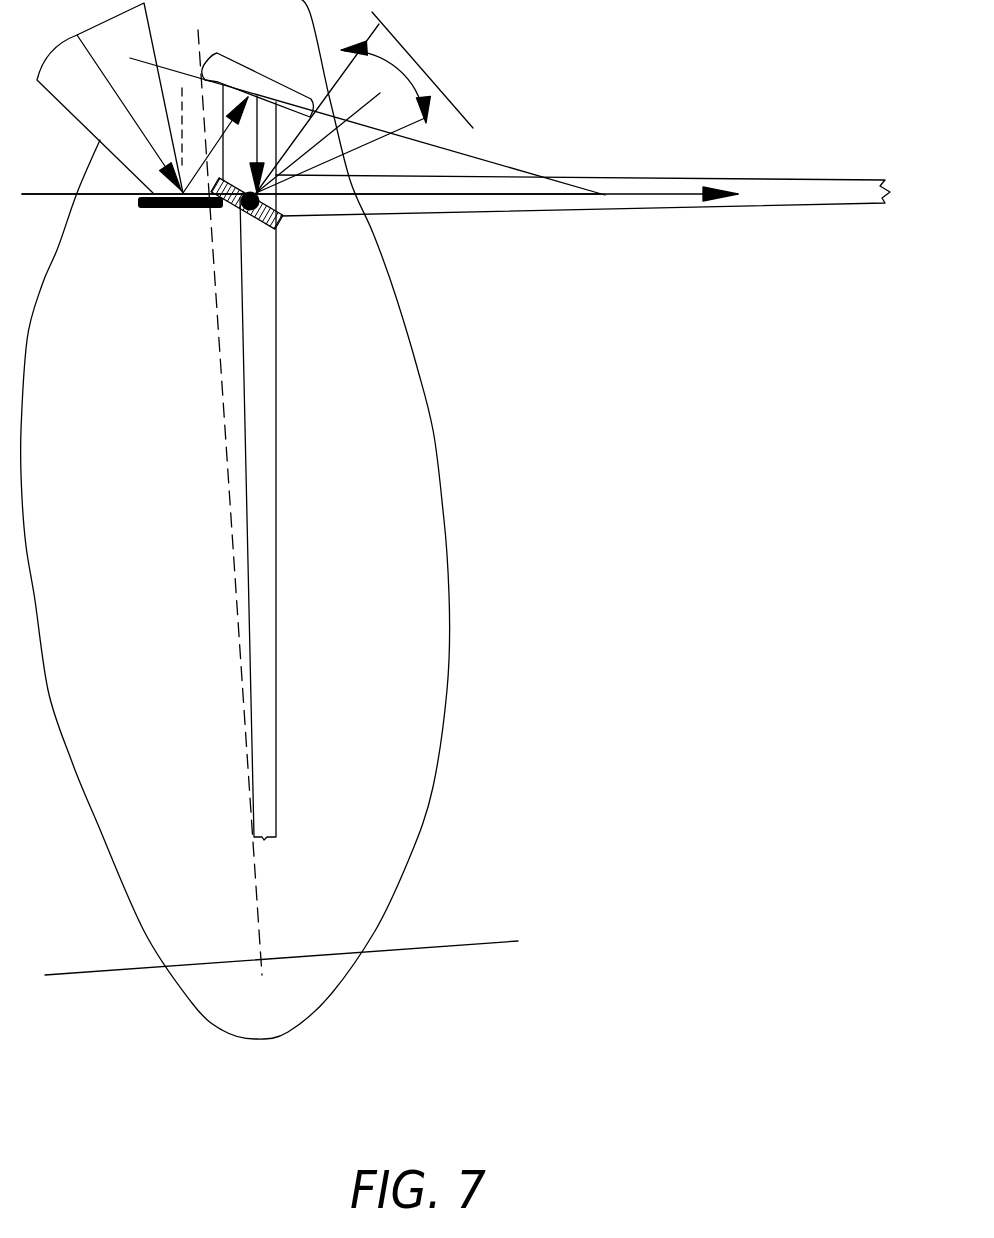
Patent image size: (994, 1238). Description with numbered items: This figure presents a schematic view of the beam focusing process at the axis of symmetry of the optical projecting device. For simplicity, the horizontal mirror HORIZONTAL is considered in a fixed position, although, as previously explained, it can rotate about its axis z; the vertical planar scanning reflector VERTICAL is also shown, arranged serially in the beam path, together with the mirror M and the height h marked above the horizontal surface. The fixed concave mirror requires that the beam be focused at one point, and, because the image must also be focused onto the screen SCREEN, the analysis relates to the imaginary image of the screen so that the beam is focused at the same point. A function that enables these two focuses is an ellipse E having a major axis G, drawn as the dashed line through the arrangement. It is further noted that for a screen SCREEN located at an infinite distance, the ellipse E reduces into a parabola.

The mirror M is at (258, 75).
The major axis G is at (231, 510).
The ellipse E is at (447, 497).
The height of mirror above horizontal surface h is at (249, 139).
The axis Z z is at (380, 173).
The screen SCREEN is at (296, 493).
The horizontal mirror HORIZONTAL is at (311, 249).
The vertical planar scanning reflector VERTICAL is at (304, 471).